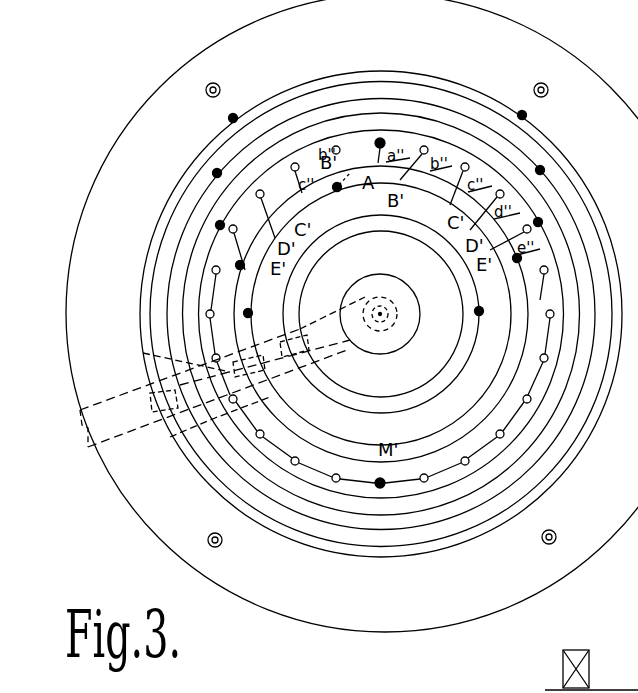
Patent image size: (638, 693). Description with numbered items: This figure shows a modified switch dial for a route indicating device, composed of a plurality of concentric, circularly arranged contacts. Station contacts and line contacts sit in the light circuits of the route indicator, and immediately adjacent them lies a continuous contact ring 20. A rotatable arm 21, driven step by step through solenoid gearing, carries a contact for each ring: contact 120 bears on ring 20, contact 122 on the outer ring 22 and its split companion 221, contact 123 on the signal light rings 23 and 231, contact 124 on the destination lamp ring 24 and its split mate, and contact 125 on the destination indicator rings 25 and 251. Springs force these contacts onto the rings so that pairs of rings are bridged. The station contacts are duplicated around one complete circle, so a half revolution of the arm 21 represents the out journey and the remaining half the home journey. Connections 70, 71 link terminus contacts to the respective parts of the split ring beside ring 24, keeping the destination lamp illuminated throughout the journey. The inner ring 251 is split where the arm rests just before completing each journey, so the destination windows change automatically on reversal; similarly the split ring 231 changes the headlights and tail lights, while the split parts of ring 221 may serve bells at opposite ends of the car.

The continuous contact ring 20 is at (363, 128).
The arm 21 is at (80, 438).
The outer ring 22 is at (234, 115).
The split outer ring 221 is at (298, 92).
The signal light ring 23 is at (218, 172).
The split signal light ring 231 is at (562, 489).
The destination lamp ring 24 is at (305, 421).
The outer destination indicator ring 25 is at (381, 314).
The inner destination indicator ring 251 is at (368, 393).
The connection 70 is at (366, 160).
The connection 71 is at (388, 478).
The arm contact 120 is at (144, 353).
The arm contact 122 is at (152, 397).
The arm contact 123 is at (202, 428).
The arm contact 124 is at (253, 355).
The arm contact 125 is at (300, 338).